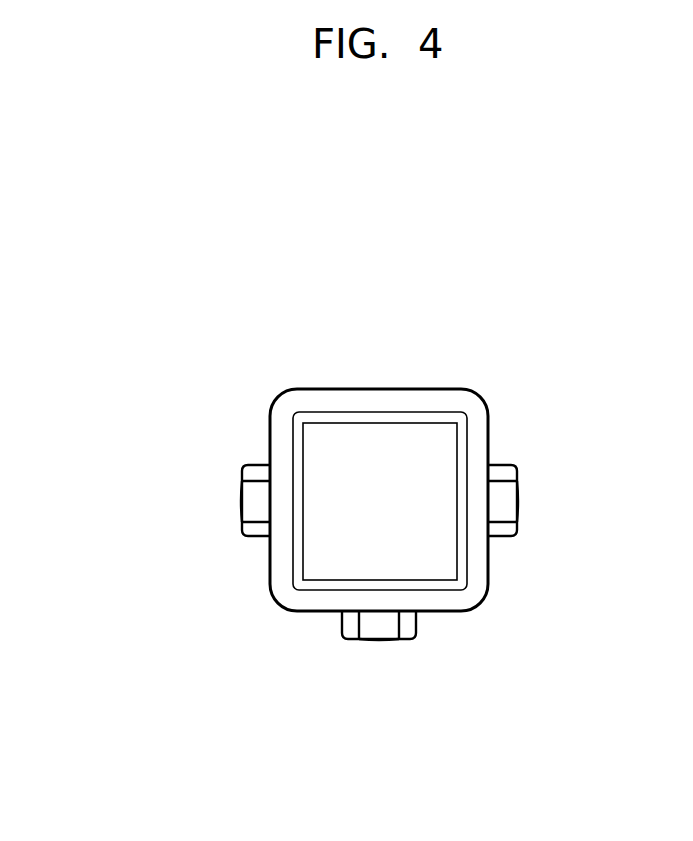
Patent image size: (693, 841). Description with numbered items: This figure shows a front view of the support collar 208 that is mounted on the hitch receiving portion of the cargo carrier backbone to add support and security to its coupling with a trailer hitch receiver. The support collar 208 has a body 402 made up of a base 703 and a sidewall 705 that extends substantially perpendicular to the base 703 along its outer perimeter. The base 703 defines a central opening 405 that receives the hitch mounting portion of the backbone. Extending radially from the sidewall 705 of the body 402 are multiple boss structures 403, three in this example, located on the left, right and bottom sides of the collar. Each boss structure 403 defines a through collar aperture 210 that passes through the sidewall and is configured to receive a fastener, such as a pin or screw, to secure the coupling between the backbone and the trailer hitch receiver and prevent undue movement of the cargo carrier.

The support collar 208 is at (547, 297).
The body 402 is at (297, 402).
The boss structure 403 is at (252, 465).
The opening 405 is at (397, 512).
The base 703 is at (298, 555).
The sidewall 705 is at (478, 585).
The collar aperture 210 is at (211, 498).